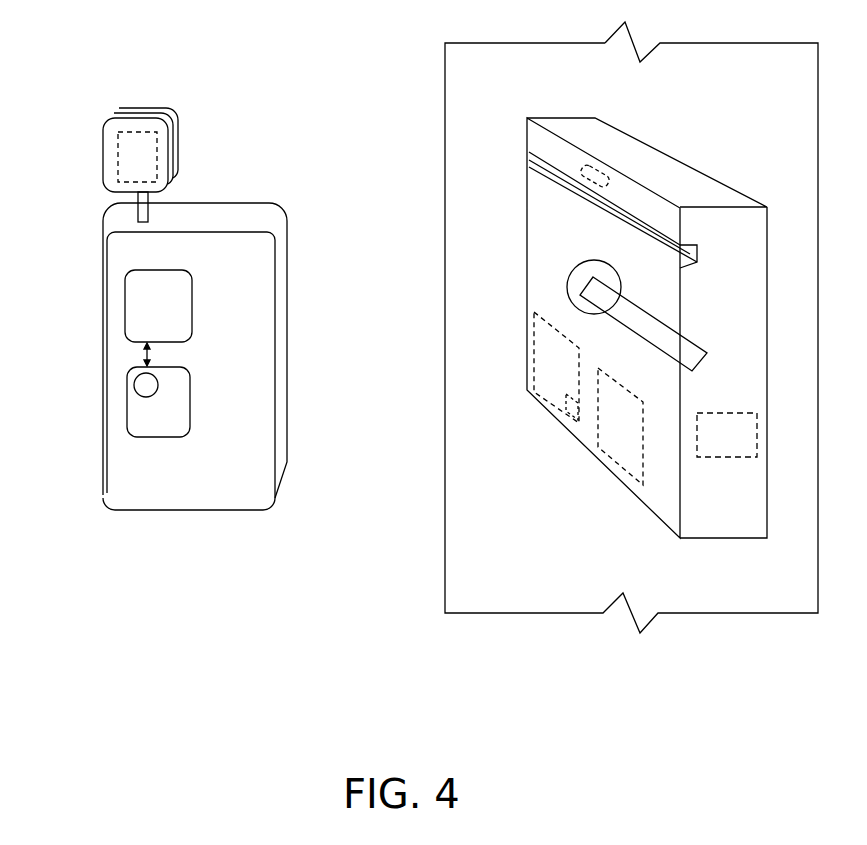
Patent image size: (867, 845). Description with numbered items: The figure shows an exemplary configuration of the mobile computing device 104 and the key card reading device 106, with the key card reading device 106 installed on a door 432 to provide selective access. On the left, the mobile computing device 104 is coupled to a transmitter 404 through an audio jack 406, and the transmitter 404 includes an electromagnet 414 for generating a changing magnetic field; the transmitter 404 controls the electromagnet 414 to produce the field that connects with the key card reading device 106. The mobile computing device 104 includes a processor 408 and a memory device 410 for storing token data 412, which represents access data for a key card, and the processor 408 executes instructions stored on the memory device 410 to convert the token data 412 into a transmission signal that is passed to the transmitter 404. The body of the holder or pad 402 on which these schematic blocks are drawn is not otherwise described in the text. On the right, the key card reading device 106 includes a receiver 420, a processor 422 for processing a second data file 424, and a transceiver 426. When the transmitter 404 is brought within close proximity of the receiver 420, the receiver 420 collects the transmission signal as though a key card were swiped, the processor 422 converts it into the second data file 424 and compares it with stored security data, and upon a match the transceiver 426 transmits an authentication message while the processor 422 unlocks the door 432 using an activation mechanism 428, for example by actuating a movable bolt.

The mobile computing device 104 is at (225, 113).
The key card reading device 106 is at (532, 297).
The pad/holder 402 is at (213, 243).
The transmitter 404 is at (110, 157).
The audio jack 406 is at (137, 208).
The processor 408 is at (140, 318).
The memory device 410 is at (142, 422).
The token data 412 is at (145, 383).
The electromagnet 414 is at (137, 148).
The receiver 420 is at (595, 150).
The processor 422 is at (545, 387).
The second data file 424 is at (558, 427).
The transceiver 426 is at (617, 438).
The activation mechanism 428 is at (757, 437).
The door 432 is at (468, 77).